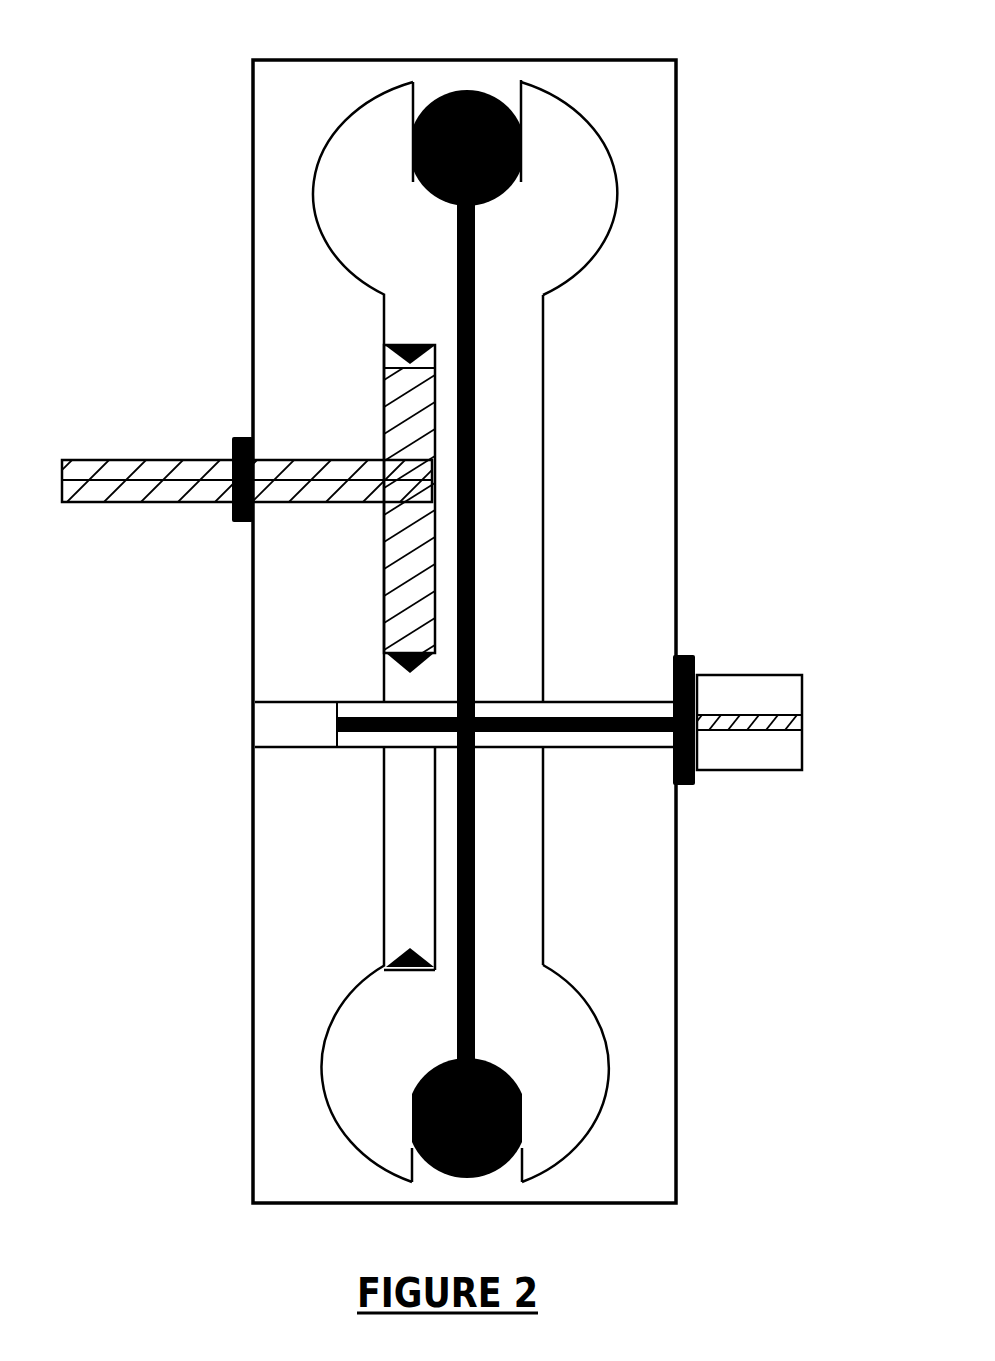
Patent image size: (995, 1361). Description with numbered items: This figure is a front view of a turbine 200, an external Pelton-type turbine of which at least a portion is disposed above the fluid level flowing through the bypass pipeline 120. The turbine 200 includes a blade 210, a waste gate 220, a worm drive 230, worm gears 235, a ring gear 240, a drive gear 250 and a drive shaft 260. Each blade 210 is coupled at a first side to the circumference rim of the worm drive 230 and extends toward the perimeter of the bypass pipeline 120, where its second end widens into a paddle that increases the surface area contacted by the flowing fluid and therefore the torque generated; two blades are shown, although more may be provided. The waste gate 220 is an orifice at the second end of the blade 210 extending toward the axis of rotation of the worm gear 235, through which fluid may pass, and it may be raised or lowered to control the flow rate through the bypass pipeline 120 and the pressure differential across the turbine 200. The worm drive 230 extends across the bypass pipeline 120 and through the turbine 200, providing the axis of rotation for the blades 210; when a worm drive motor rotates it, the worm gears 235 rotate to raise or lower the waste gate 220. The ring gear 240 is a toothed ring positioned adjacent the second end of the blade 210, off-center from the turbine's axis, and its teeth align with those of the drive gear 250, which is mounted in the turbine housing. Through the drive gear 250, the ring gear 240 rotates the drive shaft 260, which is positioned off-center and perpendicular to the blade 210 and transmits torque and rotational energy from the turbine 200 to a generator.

The bypass pipeline 120 is at (677, 1132).
The turbine 200 is at (555, 299).
The blade 210 is at (587, 104).
The waste gate 220 is at (520, 1084).
The worm drive 230 is at (751, 670).
The worm gears 235 is at (587, 714).
The ring gear 240 is at (380, 920).
The drive gear 250 is at (375, 588).
The drive shaft 260 is at (147, 450).